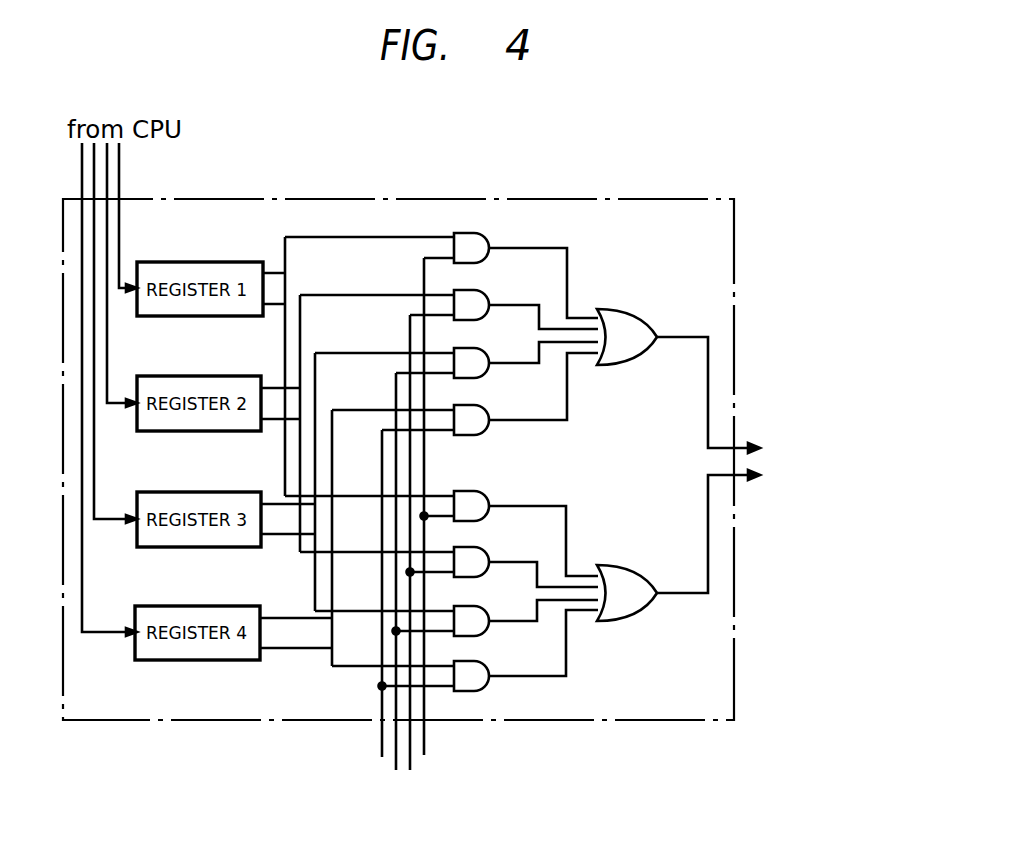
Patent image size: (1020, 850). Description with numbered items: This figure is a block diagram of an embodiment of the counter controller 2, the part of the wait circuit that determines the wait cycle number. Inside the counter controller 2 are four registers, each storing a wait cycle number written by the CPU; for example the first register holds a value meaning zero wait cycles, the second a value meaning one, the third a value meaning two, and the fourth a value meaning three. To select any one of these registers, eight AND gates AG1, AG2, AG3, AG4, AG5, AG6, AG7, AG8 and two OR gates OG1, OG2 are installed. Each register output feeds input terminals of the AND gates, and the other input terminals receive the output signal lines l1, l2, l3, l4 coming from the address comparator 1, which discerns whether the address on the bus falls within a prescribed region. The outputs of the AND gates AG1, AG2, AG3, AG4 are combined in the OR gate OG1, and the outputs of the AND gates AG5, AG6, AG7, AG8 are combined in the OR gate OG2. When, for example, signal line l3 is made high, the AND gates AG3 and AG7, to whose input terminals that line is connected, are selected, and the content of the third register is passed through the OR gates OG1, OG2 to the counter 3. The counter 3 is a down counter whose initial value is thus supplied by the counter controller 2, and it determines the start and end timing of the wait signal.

The address comparator 1 is at (514, 543).
The counter controller 2 is at (327, 198).
The counter 3 is at (797, 465).
The AND gate AG1 is at (486, 234).
The AND gate AG2 is at (470, 291).
The AND gate AG3 is at (462, 349).
The AND gate AG4 is at (470, 407).
The AND gate AG5 is at (470, 490).
The AND gate AG6 is at (470, 547).
The AND gate AG7 is at (484, 637).
The AND gate AG8 is at (484, 691).
The OR gate OG1 is at (642, 309).
The OR gate OG2 is at (642, 566).
The output signal line l1 is at (424, 742).
The output signal line l2 is at (410, 748).
The output signal line l3 is at (387, 763).
The output signal line l4 is at (382, 734).